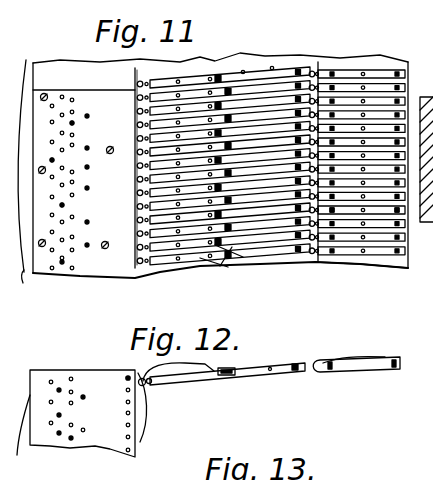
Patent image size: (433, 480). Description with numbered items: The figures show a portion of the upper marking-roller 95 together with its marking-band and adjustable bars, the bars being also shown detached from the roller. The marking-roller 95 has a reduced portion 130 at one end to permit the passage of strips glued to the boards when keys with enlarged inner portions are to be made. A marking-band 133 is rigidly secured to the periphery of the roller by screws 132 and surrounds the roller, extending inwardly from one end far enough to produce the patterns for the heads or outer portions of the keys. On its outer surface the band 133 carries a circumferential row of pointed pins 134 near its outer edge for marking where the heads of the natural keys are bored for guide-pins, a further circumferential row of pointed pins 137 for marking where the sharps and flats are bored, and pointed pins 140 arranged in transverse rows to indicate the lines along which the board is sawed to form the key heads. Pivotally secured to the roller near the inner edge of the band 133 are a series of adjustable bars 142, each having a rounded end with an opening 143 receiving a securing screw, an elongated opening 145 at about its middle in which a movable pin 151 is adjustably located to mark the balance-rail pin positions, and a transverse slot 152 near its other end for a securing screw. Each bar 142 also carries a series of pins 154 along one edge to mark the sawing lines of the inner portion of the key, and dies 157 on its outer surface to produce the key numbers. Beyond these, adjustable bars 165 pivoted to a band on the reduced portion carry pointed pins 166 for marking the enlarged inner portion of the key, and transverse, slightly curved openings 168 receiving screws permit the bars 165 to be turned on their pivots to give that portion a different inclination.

In FIG. 11, the upper marking-roller 95 is at (52, 68).
In FIG. 11, the reduced portion 130 is at (365, 252).
In FIG. 11, the screws 132 is at (22, 70).
In FIG. 11, the marking-band 133 is at (115, 267).
In FIG. 12, the marking-band 133 is at (39, 377).
In FIG. 11, the pointed pins 134 is at (50, 250).
In FIG. 12, the pointed pins 134 is at (41, 447).
In FIG. 11, the pointed pins 137 is at (87, 148).
In FIG. 12, the pointed pins 137 is at (83, 397).
In FIG. 11, the pointed pins 140 is at (133, 98).
In FIG. 12, the pointed pins 140 is at (128, 378).
In FIG. 11, the adjustable bars 142 is at (192, 97).
In FIG. 12, the adjustable bars 142 is at (198, 380).
In FIG. 12, the opening 143 is at (154, 414).
In FIG. 11, the elongated opening 145 is at (214, 80).
In FIG. 12, the elongated opening 145 is at (232, 376).
In FIG. 11, the movable pin 151 is at (235, 240).
In FIG. 12, the transverse slot 152 is at (297, 373).
In FIG. 11, the pins 154 is at (243, 72).
In FIG. 12, the pins 154 is at (273, 359).
In FIG. 11, the dies 157 is at (160, 262).
In FIG. 12, the dies 157 is at (148, 387).
In FIG. 11, the adjustable bars 165 is at (402, 228).
In FIG. 11, the pointed pins 166 is at (357, 73).
In FIG. 12, the pointed pins 166 is at (353, 365).
In FIG. 11, the transverse openings 168 is at (392, 203).
In FIG. 12, the transverse openings 168 is at (393, 372).